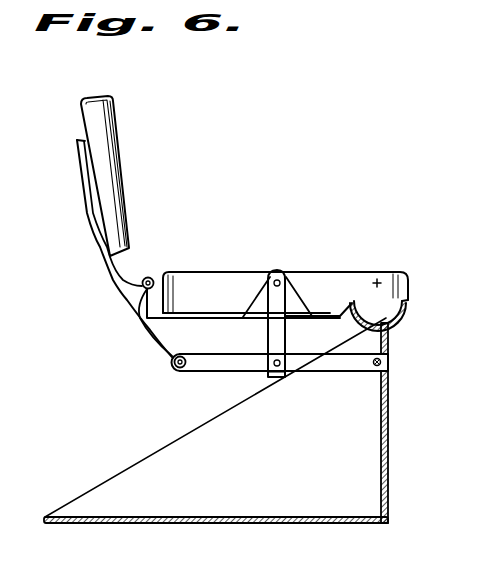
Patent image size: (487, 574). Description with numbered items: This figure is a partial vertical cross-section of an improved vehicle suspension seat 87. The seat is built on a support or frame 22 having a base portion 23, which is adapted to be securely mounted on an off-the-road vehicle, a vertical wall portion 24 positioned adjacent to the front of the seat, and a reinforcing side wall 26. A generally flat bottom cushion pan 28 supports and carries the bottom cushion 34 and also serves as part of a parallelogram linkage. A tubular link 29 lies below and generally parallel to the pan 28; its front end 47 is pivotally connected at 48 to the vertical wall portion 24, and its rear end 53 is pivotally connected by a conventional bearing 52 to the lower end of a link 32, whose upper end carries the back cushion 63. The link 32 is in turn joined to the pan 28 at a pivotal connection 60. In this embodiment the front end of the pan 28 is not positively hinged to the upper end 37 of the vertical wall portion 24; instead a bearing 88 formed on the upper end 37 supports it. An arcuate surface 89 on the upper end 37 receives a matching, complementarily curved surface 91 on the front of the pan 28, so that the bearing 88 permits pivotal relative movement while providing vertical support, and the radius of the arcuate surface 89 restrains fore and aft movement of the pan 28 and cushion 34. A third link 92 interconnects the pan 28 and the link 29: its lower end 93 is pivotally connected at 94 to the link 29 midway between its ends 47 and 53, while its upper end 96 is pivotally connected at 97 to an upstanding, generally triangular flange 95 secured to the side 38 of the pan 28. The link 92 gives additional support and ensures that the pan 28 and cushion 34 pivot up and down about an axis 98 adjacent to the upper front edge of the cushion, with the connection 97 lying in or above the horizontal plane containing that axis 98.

The support or frame 22 is at (135, 526).
The base portion 23 is at (275, 526).
The vertical wall portion 24 is at (390, 437).
The side wall 26 is at (133, 466).
The bottom cushion pan 28 is at (203, 320).
The link 29 is at (192, 375).
The link 32 is at (82, 193).
The bottom cushion 34 is at (202, 276).
The upper end of the vertical wall portion 37 is at (390, 340).
The side of the pan 38 is at (259, 323).
The front end of the link 47 is at (340, 362).
The pivotal connection 48 is at (374, 366).
The bearing 52 is at (172, 363).
The rear end of the link 53 is at (202, 353).
The pivotal connection 60 is at (150, 277).
The back cushion 63 is at (117, 118).
The improved suspension seat 87 is at (304, 232).
The bearing 88 is at (416, 309).
The arcuate surface 89 is at (400, 318).
The complementarily curved surface 91 is at (376, 310).
The link 92 is at (286, 333).
The lower end of the link 93 is at (272, 378).
The pivotal connection 94 is at (210, 363).
The flange 95 is at (294, 308).
The upper end of the link 96 is at (297, 300).
The point of connection 97 is at (268, 272).
The axis 98 is at (380, 284).